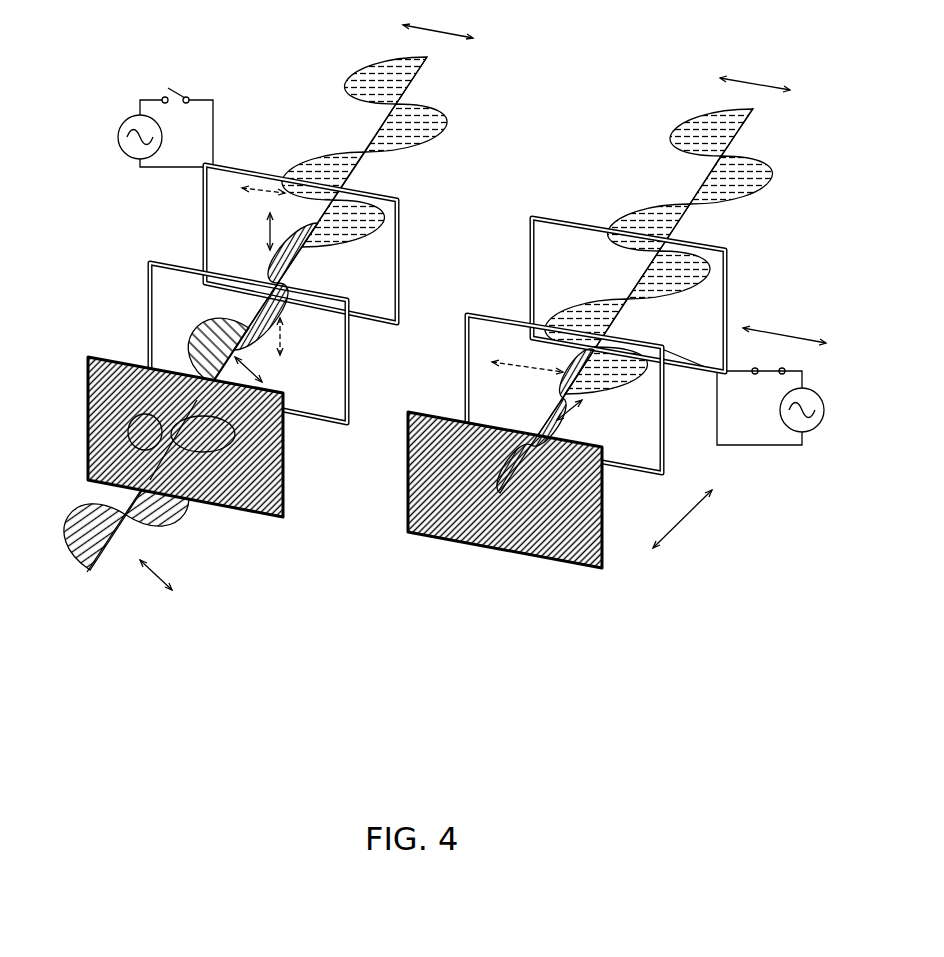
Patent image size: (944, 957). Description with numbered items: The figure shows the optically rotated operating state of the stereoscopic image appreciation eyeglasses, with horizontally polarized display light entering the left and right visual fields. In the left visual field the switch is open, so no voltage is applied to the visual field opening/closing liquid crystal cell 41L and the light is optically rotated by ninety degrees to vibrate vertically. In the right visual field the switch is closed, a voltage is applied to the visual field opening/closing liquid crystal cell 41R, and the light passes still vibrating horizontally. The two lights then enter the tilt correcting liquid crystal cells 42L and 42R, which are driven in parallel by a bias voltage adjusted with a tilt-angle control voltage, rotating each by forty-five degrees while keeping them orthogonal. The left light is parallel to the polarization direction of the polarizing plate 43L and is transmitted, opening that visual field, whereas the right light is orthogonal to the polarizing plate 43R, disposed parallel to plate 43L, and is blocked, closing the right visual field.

The visual field opening/closing liquid crystal cell 41L is at (253, 168).
The tilt correcting liquid crystal cell 42L is at (162, 262).
The polarizing plate 43L is at (100, 356).
The visual field opening/closing liquid crystal cell 41R is at (545, 215).
The tilt correcting liquid crystal cell 42R is at (476, 310).
The polarizing plate 43R is at (422, 410).